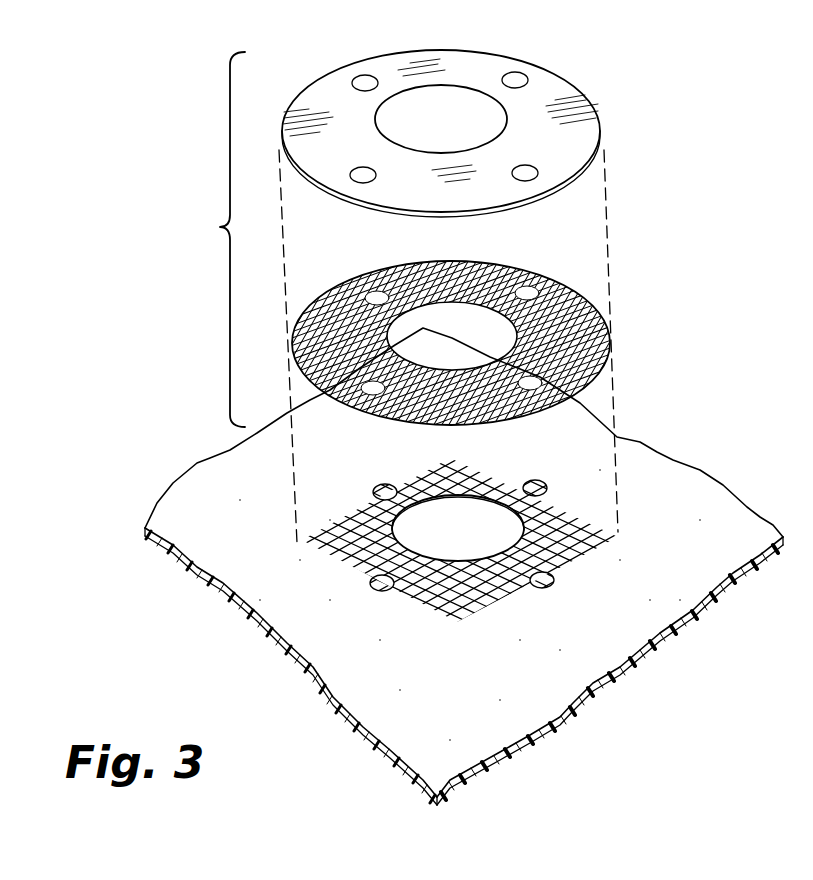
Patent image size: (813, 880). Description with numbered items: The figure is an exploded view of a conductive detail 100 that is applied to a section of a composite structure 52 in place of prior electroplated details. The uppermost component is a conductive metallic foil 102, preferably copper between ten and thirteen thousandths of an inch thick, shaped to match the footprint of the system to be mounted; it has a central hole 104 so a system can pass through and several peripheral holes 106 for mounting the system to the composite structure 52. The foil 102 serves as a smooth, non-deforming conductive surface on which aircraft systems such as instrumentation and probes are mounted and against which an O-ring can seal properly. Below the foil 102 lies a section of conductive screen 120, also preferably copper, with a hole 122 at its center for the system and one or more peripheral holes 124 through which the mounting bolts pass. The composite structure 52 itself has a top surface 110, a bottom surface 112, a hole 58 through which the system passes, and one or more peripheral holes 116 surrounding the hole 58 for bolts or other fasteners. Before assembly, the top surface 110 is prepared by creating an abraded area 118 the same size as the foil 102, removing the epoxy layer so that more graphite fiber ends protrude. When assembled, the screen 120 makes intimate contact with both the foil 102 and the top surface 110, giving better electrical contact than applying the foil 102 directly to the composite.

The composite structure 52 is at (464, 566).
The hole 58 is at (458, 540).
The detail 100 is at (211, 239).
The conductive metallic foil 102 is at (563, 101).
The hole 104 is at (452, 108).
The peripheral holes 106 is at (365, 82).
The top surface 110 is at (632, 612).
The bottom surface 112 is at (617, 677).
The peripheral holes 116 is at (385, 490).
The abraded area 118 is at (597, 507).
The screen 120 is at (590, 315).
The hole 122 is at (467, 330).
The peripheral holes 124 is at (377, 295).